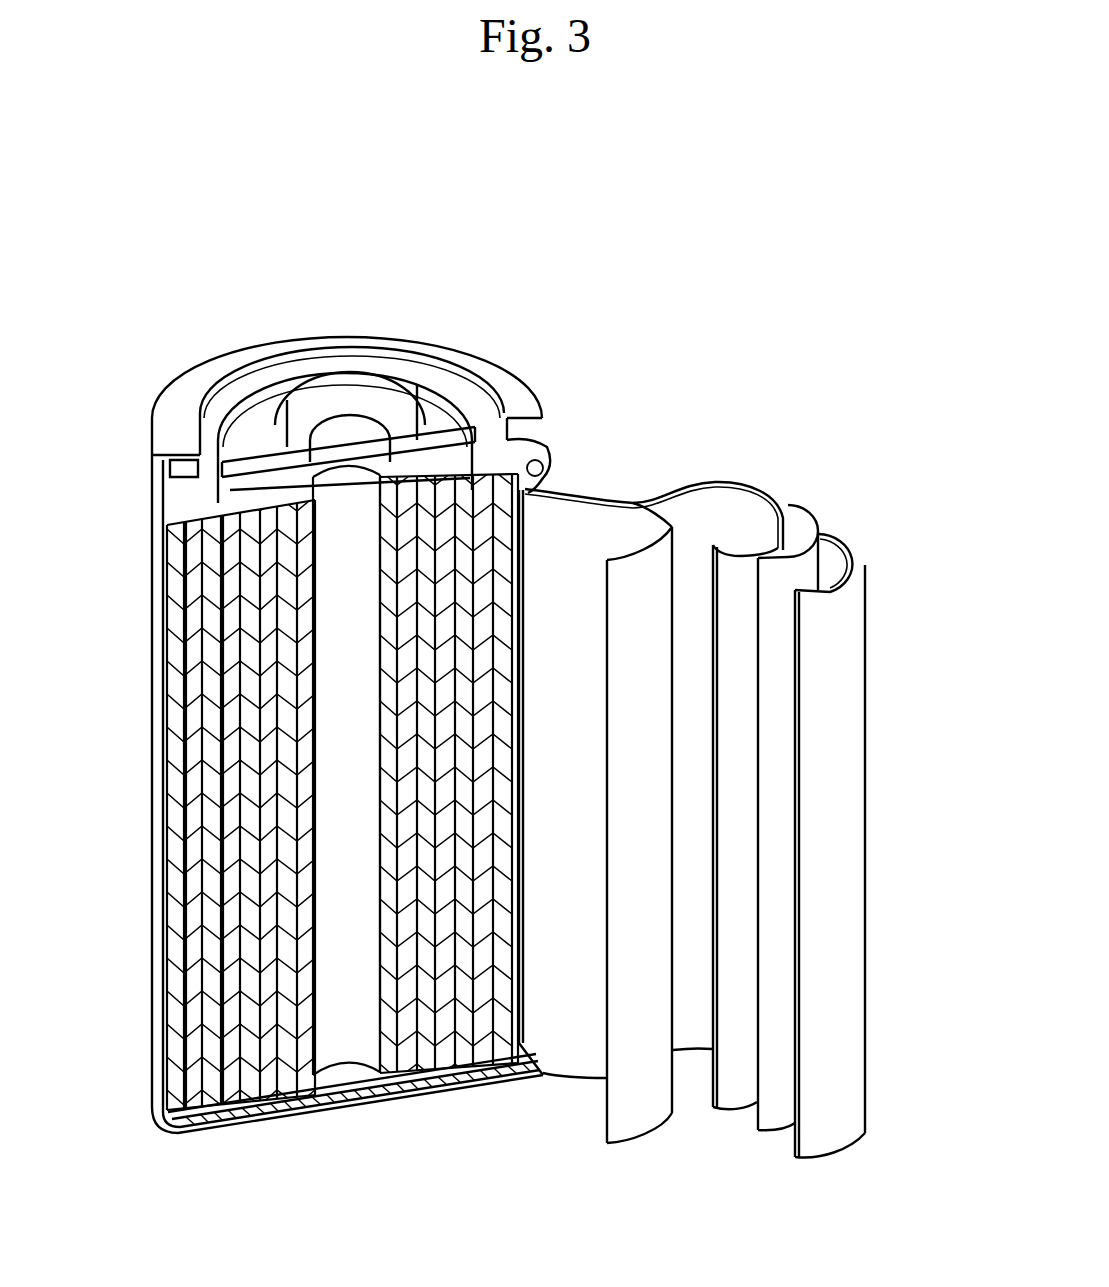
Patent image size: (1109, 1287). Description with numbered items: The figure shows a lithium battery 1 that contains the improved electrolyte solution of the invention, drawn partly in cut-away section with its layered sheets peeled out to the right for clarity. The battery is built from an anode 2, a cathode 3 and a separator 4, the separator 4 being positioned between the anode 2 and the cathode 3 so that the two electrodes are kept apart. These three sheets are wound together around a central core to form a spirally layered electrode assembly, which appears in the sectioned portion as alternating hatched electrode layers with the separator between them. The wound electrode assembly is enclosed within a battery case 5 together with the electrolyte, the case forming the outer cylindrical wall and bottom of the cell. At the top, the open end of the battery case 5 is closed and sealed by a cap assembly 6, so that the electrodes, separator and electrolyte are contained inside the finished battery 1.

The lithium battery 1 is at (830, 448).
The anode 2 is at (848, 678).
The cathode 3 is at (733, 557).
The separator 4 is at (807, 560).
The battery case 5 is at (150, 1040).
The cap assembly 6 is at (363, 377).